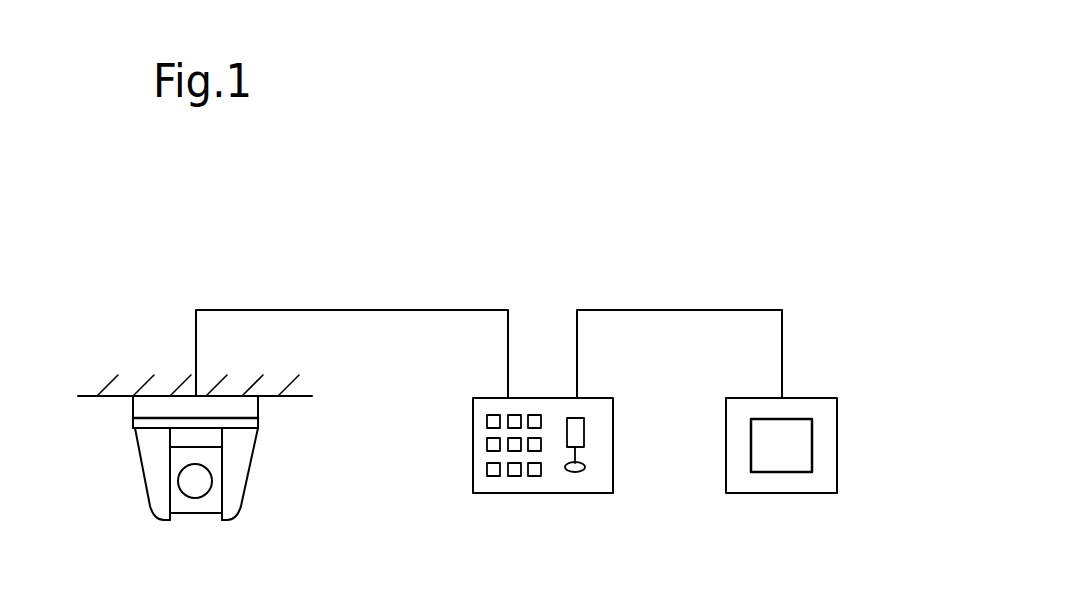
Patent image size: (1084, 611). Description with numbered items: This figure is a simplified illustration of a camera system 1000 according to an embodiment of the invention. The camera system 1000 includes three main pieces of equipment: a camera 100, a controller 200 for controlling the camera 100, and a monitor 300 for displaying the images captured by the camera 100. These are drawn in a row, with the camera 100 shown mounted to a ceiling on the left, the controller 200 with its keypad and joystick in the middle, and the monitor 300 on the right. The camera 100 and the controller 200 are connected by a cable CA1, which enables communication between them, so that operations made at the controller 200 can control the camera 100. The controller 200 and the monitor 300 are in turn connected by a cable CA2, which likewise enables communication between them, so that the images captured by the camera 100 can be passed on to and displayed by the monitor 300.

The camera system 1000 is at (656, 202).
The camera 100 is at (252, 468).
The controller 200 is at (473, 442).
The monitor 300 is at (837, 445).
The cable CA1 is at (442, 310).
The cable CA2 is at (715, 310).